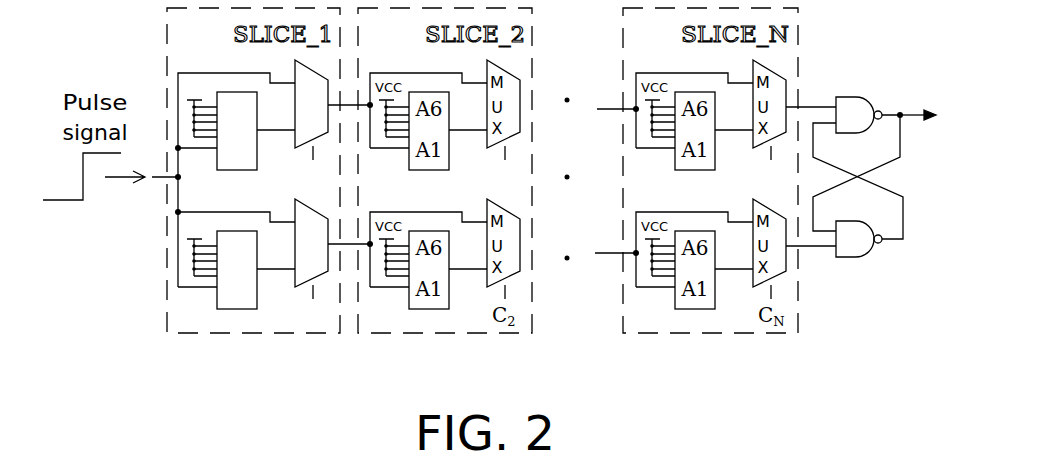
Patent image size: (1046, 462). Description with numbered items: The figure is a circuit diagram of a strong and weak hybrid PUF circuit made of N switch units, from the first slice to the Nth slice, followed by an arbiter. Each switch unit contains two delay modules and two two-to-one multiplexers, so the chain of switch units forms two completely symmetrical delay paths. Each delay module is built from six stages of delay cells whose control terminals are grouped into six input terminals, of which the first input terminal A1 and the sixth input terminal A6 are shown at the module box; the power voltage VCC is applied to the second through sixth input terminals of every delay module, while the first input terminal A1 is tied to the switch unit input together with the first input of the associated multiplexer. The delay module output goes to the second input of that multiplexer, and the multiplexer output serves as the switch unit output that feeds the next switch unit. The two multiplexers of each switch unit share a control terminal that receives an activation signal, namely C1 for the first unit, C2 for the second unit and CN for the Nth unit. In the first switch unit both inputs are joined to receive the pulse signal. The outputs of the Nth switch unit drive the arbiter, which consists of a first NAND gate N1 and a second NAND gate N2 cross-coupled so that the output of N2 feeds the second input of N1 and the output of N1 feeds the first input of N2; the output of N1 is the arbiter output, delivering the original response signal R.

The sixth input terminal of the delay module A6 is at (253, 125).
The first input terminal of the delay module A1 is at (253, 264).
The power voltage VCC is at (196, 87).
The activation signal C1 is at (312, 177).
The activation signal C2 is at (504, 177).
The activation signal CN is at (771, 177).
The first NAND gate N1 is at (858, 168).
The second NAND gate N2 is at (856, 186).
The original response signal R is at (928, 115).